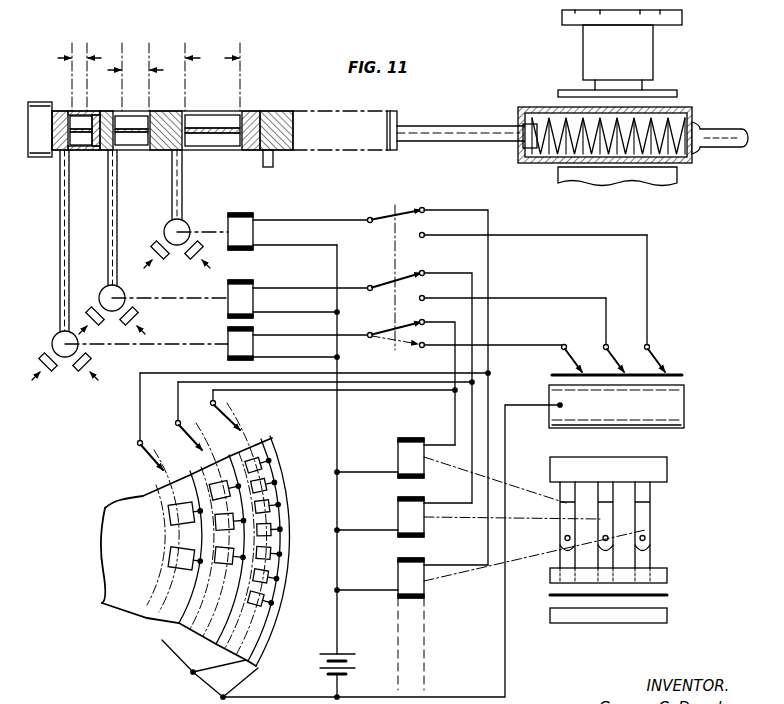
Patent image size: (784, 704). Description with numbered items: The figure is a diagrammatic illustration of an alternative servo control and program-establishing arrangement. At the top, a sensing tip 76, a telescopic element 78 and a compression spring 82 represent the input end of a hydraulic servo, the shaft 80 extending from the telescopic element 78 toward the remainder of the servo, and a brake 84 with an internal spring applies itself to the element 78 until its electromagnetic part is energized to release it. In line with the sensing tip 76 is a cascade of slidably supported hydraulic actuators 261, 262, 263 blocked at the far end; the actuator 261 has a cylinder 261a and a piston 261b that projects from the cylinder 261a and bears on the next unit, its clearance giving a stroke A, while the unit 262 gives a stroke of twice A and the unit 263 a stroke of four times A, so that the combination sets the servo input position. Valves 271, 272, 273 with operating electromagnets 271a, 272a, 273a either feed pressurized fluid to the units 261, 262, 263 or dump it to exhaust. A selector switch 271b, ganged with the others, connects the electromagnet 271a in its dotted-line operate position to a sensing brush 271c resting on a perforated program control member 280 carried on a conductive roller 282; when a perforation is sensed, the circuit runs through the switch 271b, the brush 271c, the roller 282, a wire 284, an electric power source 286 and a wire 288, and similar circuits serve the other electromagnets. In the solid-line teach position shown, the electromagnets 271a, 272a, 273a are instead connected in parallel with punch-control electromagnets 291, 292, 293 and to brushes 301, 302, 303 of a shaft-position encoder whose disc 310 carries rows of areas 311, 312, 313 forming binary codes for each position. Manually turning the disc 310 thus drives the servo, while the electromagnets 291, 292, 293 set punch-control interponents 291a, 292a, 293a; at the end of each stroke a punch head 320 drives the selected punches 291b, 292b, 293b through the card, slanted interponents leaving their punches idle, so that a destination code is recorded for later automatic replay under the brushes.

The cylinder 261a is at (68, 112).
The piston 261b is at (74, 111).
The hydraulic actuator 261 is at (81, 151).
The hydraulic actuator 262 is at (133, 151).
The hydraulic actuator 263 is at (205, 151).
The sensing tip 76 is at (436, 126).
The telescopic element 78 is at (548, 112).
The shaft 80 is at (706, 129).
The compression spring 82 is at (548, 161).
The brake 84 is at (652, 45).
The valve 271 is at (64, 358).
The valve 272 is at (112, 311).
The valve 273 is at (175, 245).
The operating electromagnet 271a is at (253, 342).
The operating electromagnet 272a is at (253, 297).
The operating electromagnet 273a is at (253, 230).
The selector switch 271b is at (395, 328).
The sensing brush 271c is at (560, 357).
The perforated program control member 280 is at (676, 374).
The conductive roller 282 is at (671, 423).
The wire 284 is at (506, 655).
The electric power source 286 is at (320, 660).
The wire 288 is at (340, 415).
The punch-control electromagnet 291 is at (398, 452).
The punch-control electromagnet 292 is at (398, 514).
The punch-control electromagnet 293 is at (398, 574).
The punch-control interponent 291a is at (566, 502).
The punch-control interponent 292a is at (607, 505).
The punch-control interponent 293a is at (651, 506).
The punch 291b is at (566, 552).
The punch 292b is at (605, 550).
The punch 293b is at (651, 554).
The punch head 320 is at (585, 457).
The brush 301 is at (227, 422).
The brush 302 is at (190, 438).
The brush 303 is at (152, 460).
The disc 310 is at (125, 590).
The areas 311 is at (281, 540).
The areas 312 is at (213, 523).
The areas 313 is at (169, 514).